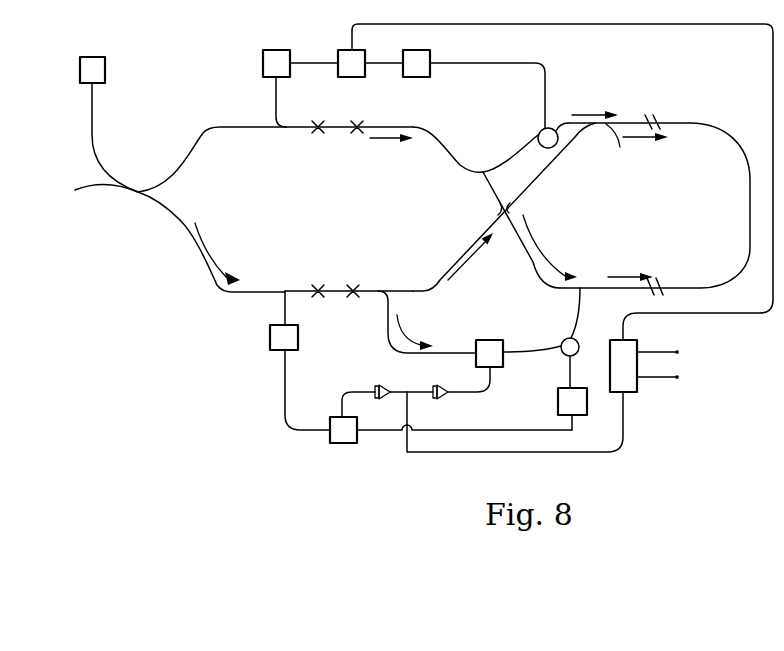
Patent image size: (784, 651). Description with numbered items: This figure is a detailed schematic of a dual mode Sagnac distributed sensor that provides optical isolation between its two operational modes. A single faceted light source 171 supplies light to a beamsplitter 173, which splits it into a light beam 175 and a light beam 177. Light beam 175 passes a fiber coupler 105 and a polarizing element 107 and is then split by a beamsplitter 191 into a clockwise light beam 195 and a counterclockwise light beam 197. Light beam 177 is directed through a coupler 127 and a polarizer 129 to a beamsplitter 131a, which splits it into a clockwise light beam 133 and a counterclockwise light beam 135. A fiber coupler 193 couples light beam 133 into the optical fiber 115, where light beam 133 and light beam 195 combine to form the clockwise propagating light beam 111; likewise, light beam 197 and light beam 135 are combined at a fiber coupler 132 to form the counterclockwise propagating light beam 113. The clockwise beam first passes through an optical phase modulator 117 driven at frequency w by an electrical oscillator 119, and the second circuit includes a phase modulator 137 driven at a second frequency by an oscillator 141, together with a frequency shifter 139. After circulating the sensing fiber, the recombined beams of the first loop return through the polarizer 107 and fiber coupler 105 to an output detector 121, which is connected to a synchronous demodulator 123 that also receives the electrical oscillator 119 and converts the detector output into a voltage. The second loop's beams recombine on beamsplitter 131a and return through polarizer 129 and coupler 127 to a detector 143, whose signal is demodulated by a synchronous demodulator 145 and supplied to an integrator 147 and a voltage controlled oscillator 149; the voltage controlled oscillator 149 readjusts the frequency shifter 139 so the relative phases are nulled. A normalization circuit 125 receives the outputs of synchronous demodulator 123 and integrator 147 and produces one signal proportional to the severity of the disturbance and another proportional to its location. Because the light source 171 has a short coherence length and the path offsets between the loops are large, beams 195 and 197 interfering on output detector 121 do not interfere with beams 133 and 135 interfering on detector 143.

The single faceted light source 171 is at (107, 77).
The beamsplitter 173 is at (138, 190).
The light beam 177 is at (220, 260).
The output detector 121 is at (288, 50).
The synchronous demodulator 123 is at (365, 68).
The electrical oscillator 119 is at (415, 50).
The fiber coupler 105 is at (297, 117).
The polarizing element 107 is at (338, 131).
The light beam 175 is at (382, 140).
The beamsplitter 191 is at (483, 175).
The optical phase modulator 117 is at (538, 133).
The clockwise counterpropagating light beam 133 is at (473, 255).
The counterclockwise light beam 197 is at (540, 255).
The optical fiber 115 is at (750, 215).
The clockwise light beam 195 is at (572, 115).
The fiber coupler 193 is at (595, 125).
The clockwise beam 111 is at (637, 142).
The counterclockwise beam 113 is at (627, 277).
The coupler 127 is at (298, 300).
The polarizer 129 is at (336, 294).
The beamsplitter 131a is at (381, 291).
The counterclockwise counterpropagating light beam 135 is at (413, 330).
The frequency shifter 139 is at (504, 345).
The phase modulator 137 is at (562, 343).
The fiber coupler 132 is at (590, 301).
The oscillator 141 is at (558, 393).
The detector 143 is at (270, 348).
The synchronous demodulator 145 is at (330, 422).
The integrator 147 is at (381, 386).
The voltage controlled oscillator 149 is at (446, 386).
The normalization circuit 125 is at (637, 393).